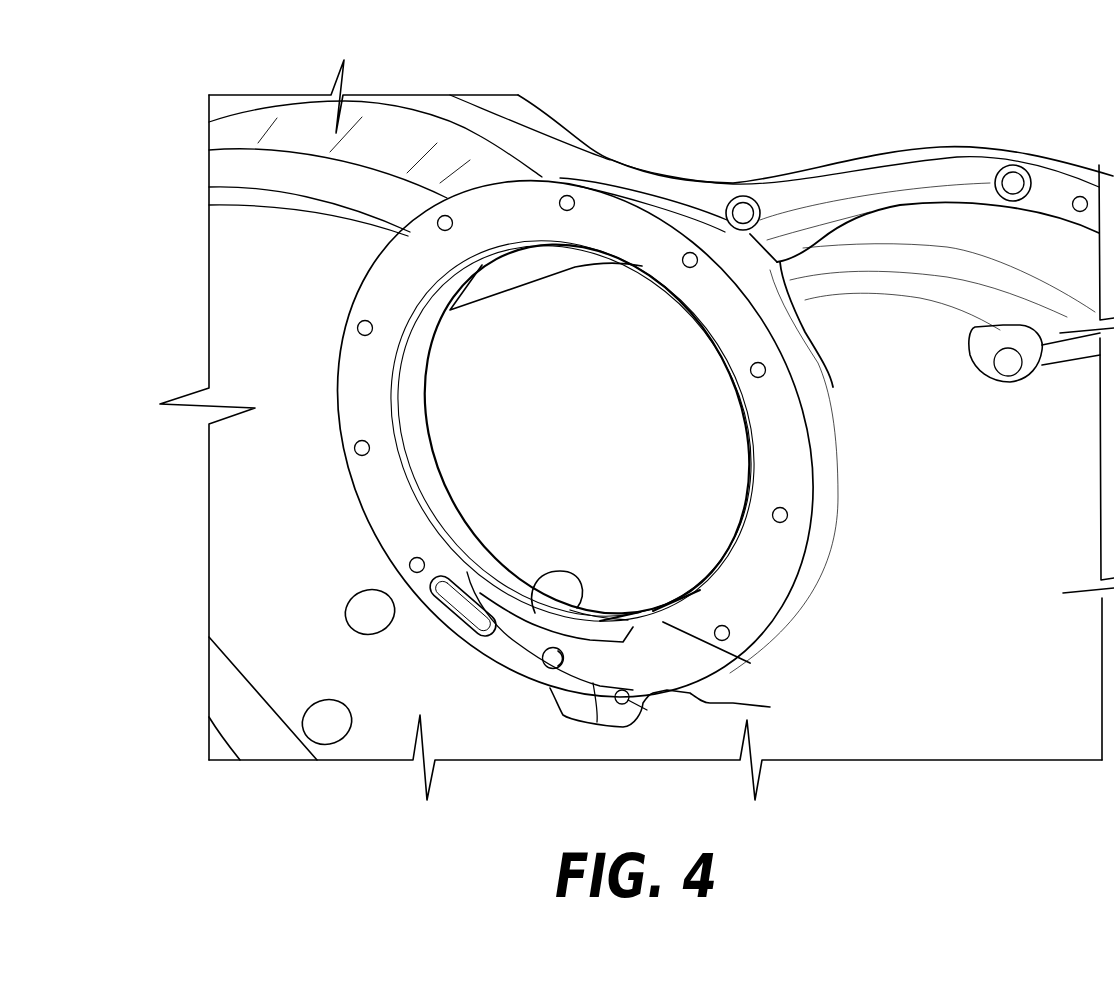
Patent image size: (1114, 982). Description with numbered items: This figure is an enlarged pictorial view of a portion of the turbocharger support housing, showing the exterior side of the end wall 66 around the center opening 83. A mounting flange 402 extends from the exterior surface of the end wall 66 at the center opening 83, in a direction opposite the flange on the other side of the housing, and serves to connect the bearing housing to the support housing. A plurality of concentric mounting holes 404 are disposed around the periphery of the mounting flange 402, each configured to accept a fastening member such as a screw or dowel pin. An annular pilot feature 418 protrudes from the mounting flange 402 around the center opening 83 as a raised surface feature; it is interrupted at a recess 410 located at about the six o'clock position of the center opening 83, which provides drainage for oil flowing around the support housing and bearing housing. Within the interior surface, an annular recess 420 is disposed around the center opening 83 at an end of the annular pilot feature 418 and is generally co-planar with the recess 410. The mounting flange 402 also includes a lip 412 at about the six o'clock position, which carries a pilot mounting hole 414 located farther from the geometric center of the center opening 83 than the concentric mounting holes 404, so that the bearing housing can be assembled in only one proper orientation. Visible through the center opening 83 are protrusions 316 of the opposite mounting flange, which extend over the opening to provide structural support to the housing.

The end wall 66 is at (133, 91).
The mounting flange 402 is at (367, 480).
The concentric mounting holes 404 is at (364, 321).
The annular pilot feature 418 is at (580, 243).
The center opening 83 is at (645, 415).
The protrusions 316 is at (525, 282).
The annular recess 420 is at (557, 590).
The recess 410 is at (700, 686).
The lip 412 is at (595, 717).
The pilot mounting hole 414 is at (647, 708).